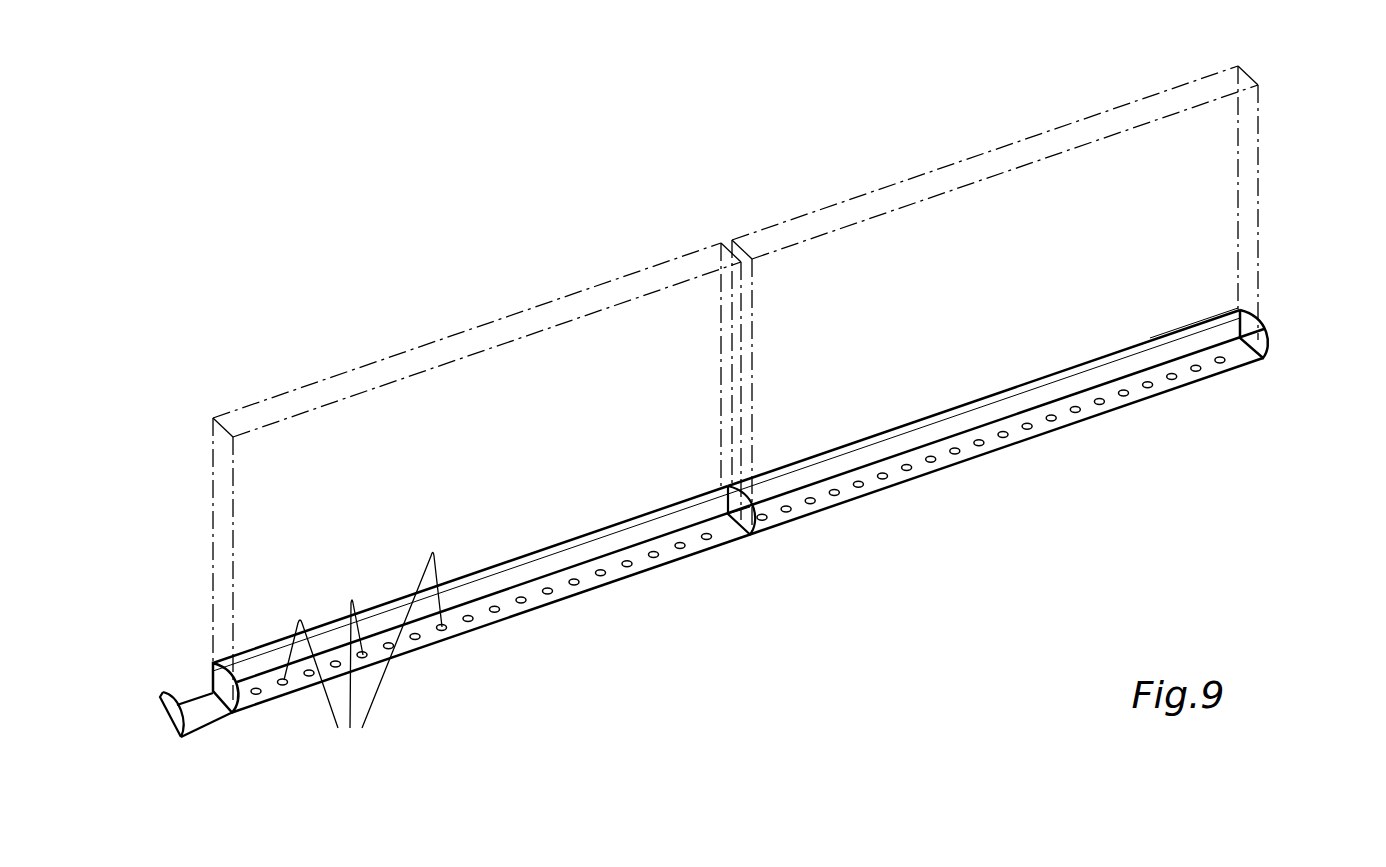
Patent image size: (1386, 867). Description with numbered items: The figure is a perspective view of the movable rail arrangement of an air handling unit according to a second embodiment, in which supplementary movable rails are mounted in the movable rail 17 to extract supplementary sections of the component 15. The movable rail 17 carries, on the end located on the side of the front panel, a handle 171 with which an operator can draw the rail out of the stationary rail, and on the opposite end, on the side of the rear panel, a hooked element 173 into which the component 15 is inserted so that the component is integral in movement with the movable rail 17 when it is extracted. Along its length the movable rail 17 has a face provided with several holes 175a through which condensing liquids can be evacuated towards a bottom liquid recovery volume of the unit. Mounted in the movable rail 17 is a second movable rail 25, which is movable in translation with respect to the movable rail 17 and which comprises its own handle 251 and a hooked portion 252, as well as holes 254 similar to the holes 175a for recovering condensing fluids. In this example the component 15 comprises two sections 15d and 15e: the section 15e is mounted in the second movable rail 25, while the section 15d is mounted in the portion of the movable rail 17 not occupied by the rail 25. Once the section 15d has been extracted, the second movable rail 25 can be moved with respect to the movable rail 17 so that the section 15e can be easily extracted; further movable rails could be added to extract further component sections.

The component 15 is at (826, 135).
The section of the component 15d is at (638, 283).
The section of the component 15e is at (840, 213).
The movable rail 17 is at (540, 566).
The handle 171 is at (163, 706).
The hooked element 173 is at (1267, 348).
The holes 175a is at (363, 655).
The second movable rail 25 is at (1140, 398).
The handle 251 is at (734, 524).
The hooked portion 252 is at (1210, 336).
The holes 254 is at (882, 471).